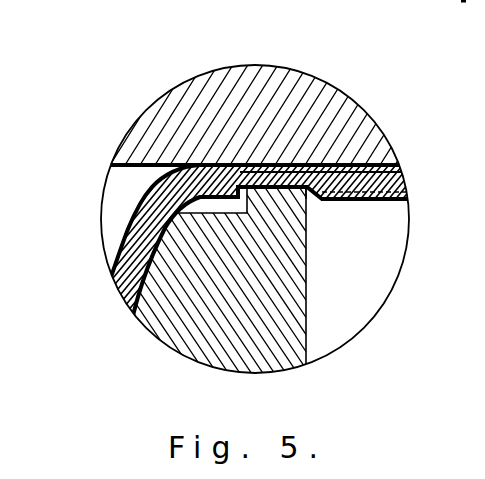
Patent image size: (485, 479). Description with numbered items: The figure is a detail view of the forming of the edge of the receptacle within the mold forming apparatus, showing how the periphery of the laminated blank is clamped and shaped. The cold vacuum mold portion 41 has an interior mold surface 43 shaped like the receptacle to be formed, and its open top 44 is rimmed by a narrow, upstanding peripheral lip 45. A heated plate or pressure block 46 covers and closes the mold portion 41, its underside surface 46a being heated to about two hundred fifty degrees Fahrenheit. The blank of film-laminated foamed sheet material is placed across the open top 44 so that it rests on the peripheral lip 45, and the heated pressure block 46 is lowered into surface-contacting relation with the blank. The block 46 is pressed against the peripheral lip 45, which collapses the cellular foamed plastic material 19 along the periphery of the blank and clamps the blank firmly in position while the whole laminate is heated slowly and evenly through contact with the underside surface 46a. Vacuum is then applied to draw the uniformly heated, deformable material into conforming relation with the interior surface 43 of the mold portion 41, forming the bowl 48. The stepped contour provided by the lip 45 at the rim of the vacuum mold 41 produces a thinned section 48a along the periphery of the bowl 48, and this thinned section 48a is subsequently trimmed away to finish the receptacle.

The cellular foamed plastic material 19 is at (120, 243).
The vacuum mold portion 41 is at (220, 350).
The interior mold surface 43 is at (150, 275).
The open top 44 is at (228, 214).
The peripheral lip 45 is at (300, 201).
The pressure block 46 is at (268, 92).
The underside surface 46a is at (156, 162).
The bowl 48 is at (135, 202).
The thinned section 48a is at (291, 165).